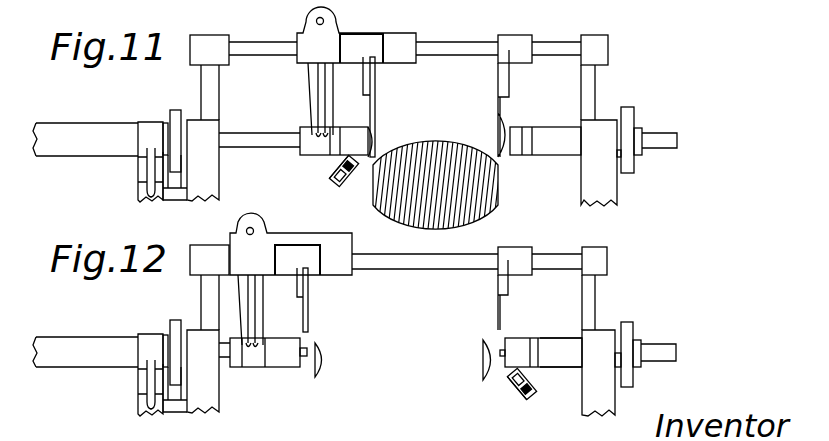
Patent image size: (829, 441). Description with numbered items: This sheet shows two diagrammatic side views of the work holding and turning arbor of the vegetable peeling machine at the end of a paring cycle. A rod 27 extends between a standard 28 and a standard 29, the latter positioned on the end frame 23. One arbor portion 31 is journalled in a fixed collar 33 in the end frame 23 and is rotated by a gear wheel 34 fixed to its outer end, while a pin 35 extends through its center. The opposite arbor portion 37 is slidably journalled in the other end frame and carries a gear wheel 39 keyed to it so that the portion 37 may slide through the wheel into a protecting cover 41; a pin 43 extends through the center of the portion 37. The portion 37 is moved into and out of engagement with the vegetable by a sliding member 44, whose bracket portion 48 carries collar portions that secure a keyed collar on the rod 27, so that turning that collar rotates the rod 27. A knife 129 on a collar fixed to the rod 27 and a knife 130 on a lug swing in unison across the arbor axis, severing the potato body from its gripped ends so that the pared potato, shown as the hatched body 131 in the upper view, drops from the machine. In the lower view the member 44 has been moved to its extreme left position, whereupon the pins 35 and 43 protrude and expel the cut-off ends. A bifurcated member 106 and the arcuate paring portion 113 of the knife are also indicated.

In FIG. 11, the end frame 23 is at (613, 183).
In FIG. 11, the rod 27 is at (450, 44).
In FIG. 12, the rod 27 is at (407, 271).
In FIG. 11, the standard 28 is at (215, 88).
In FIG. 12, the standard 28 is at (206, 301).
In FIG. 12, the standard 29 is at (590, 296).
In FIG. 12, the arbor portion 31 is at (520, 347).
In FIG. 11, the fixed collar 33 is at (553, 136).
In FIG. 12, the fixed collar 33 is at (556, 359).
In FIG. 11, the gear wheel 34 is at (628, 118).
In FIG. 12, the pin 35 is at (501, 360).
In FIG. 11, the arbor portion 37 is at (347, 131).
In FIG. 12, the arbor portion 37 is at (281, 359).
In FIG. 11, the gear wheel 39 is at (174, 118).
In FIG. 12, the protecting cover 41 is at (84, 360).
In FIG. 12, the pin 43 is at (303, 368).
In FIG. 11, the sliding member 44 is at (310, 100).
In FIG. 12, the sliding member 44 is at (262, 310).
In FIG. 12, the bracket portion 48 is at (288, 240).
In FIG. 11, the bifurcated member 106 is at (337, 174).
In FIG. 12, the bifurcated member 106 is at (532, 387).
In FIG. 11, the arcuate portion 113 is at (353, 160).
In FIG. 12, the arcuate portion 113 is at (506, 374).
In FIG. 11, the knife 129 is at (497, 107).
In FIG. 12, the knife 129 is at (497, 313).
In FIG. 11, the knife 130 is at (380, 104).
In FIG. 12, the knife 130 is at (309, 310).
In FIG. 11, the lens 131 is at (436, 146).
In FIG. 12, the lens 131 is at (323, 365).